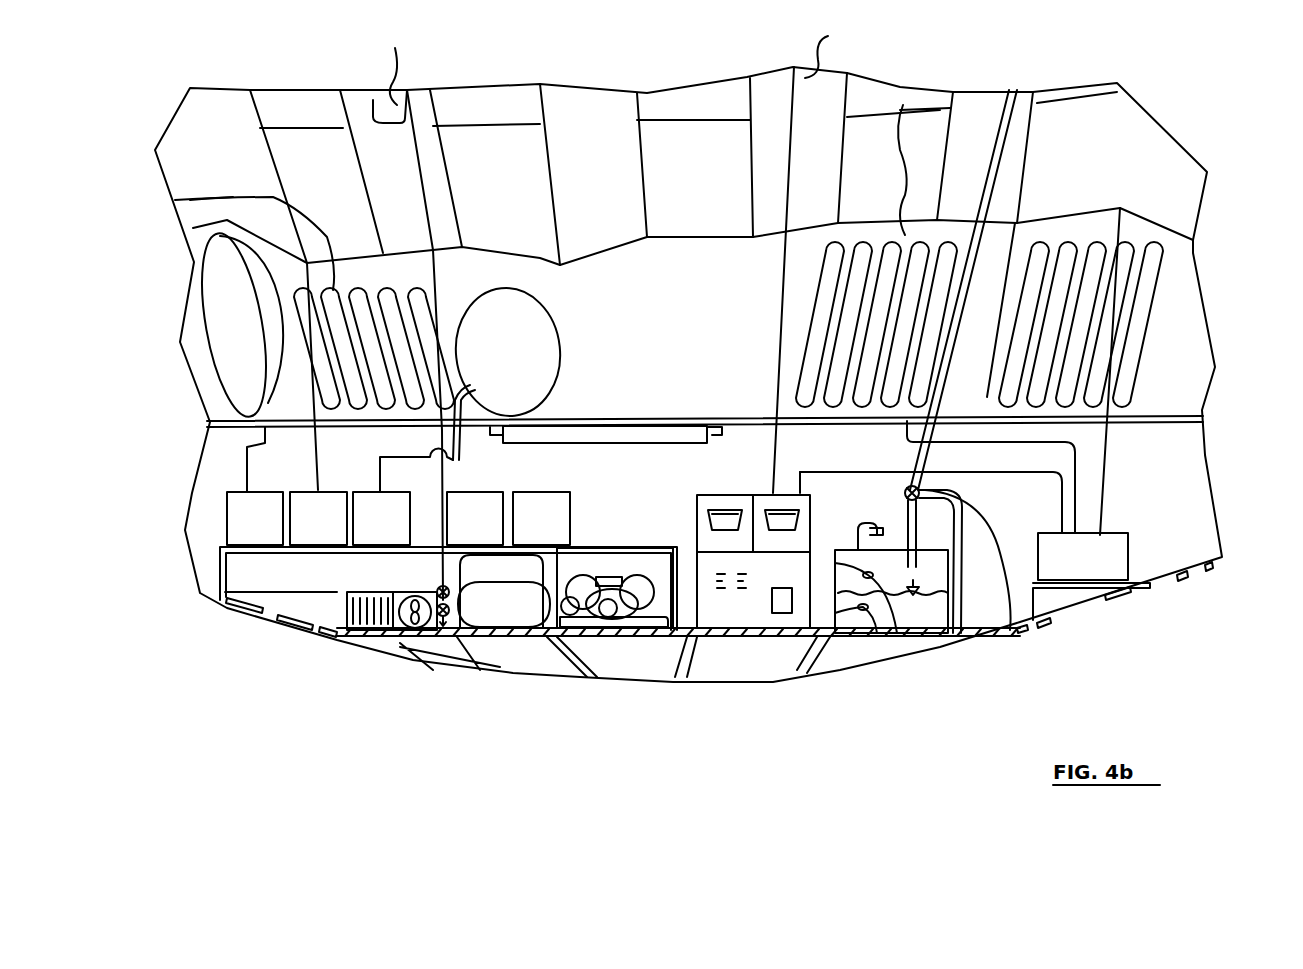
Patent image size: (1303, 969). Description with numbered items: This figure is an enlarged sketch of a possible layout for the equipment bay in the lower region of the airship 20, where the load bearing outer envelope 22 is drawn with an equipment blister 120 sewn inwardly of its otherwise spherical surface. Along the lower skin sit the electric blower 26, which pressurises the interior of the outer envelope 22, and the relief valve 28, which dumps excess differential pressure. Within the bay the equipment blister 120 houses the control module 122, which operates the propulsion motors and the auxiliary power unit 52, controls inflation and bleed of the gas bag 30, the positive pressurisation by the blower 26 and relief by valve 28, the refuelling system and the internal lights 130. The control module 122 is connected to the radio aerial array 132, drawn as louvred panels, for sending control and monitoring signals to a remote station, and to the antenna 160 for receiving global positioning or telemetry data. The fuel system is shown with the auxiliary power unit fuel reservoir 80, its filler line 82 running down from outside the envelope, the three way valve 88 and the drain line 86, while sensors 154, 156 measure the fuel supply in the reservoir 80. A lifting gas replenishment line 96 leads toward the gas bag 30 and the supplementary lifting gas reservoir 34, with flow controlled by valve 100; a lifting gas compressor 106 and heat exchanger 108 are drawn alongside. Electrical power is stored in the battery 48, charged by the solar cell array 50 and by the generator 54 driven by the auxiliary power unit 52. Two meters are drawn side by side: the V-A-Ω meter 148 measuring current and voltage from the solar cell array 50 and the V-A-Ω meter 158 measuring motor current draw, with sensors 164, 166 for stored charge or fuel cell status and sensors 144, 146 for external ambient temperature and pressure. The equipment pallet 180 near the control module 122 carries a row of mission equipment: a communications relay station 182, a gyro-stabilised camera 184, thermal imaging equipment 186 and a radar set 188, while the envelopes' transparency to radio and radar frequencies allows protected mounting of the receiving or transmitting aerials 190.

The airship 20 is at (298, 714).
The outer envelope 22 is at (190, 215).
The blower 26 is at (296, 630).
The relief valve 28 is at (235, 612).
The gas bag 30 is at (388, 64).
The supplementary lifting gas reservoir 34 is at (455, 625).
The battery 48 is at (732, 605).
The solar cell array 50 is at (834, 260).
The auxiliary power unit 52 is at (622, 623).
The generator 54 is at (572, 620).
The auxiliary power unit fuel reservoir 80 is at (1000, 625).
The filler line 82 is at (1011, 90).
The drain line 86 is at (970, 640).
The three way valve 88 is at (1035, 605).
The lifting gas replenishment line 96 is at (373, 100).
The valve 100 is at (483, 575).
The lifting gas compressor 106 is at (408, 628).
The heat exchanger 108 is at (370, 625).
The equipment blister 120 is at (1190, 412).
The control module 122 is at (1108, 585).
The internal lights 130 is at (637, 435).
The radio aerial array 132 is at (1150, 302).
The sensor 144 is at (1182, 582).
The sensor 146 is at (1210, 570).
The V-A-Ω meter 148 is at (812, 520).
The sensor 154 is at (877, 635).
The sensor 156 is at (940, 583).
The V-A-Ω meter 158 is at (725, 620).
The antenna 160 is at (903, 105).
The sensor 164 is at (785, 615).
The sensor 166 is at (470, 635).
The equipment pallet 180 is at (222, 570).
The communications relay station 182 is at (225, 297).
The gyro-stabilised camera 184 is at (490, 505).
The thermal imaging equipment 186 is at (560, 505).
The radar set 188 is at (560, 318).
The aerials 190 is at (190, 200).